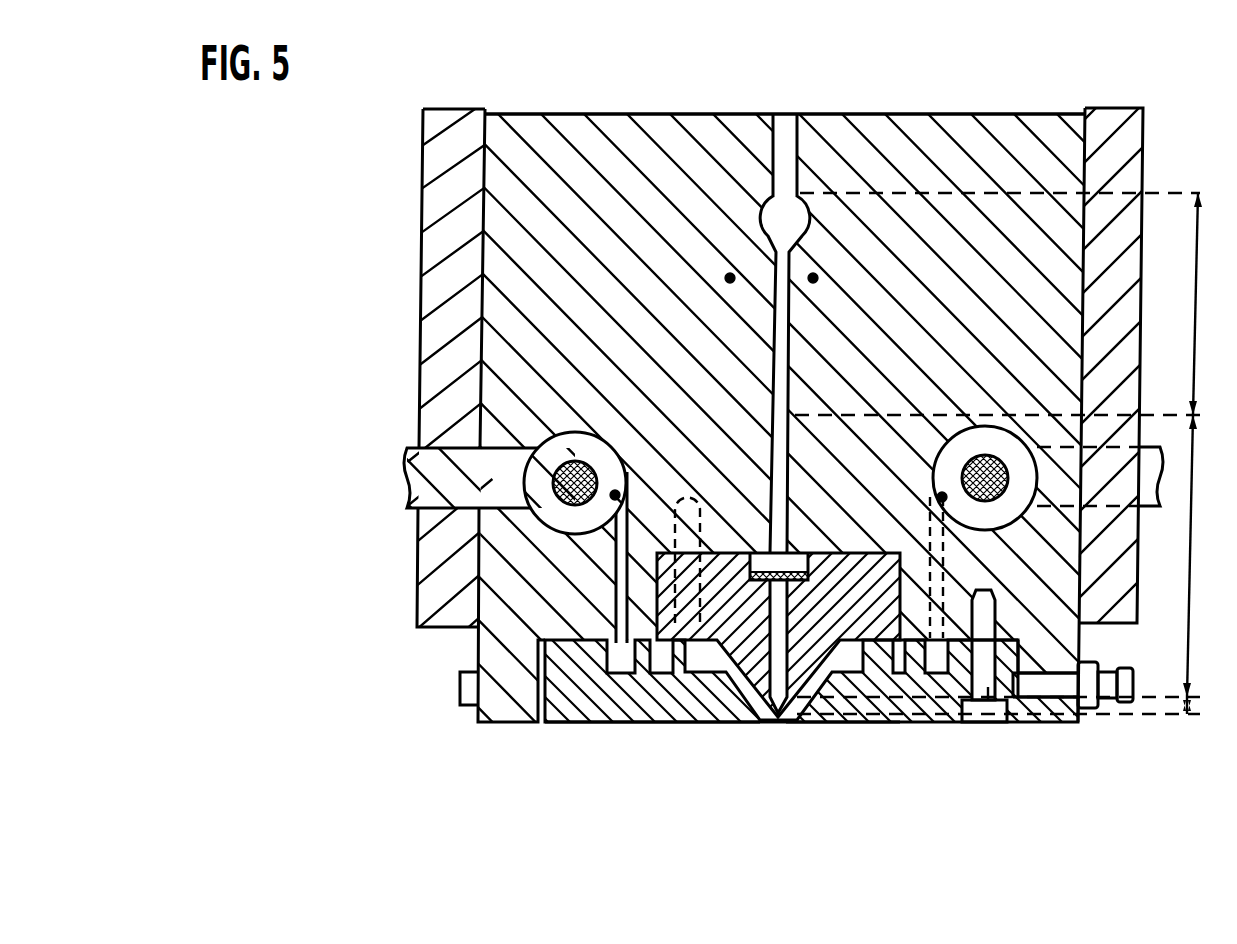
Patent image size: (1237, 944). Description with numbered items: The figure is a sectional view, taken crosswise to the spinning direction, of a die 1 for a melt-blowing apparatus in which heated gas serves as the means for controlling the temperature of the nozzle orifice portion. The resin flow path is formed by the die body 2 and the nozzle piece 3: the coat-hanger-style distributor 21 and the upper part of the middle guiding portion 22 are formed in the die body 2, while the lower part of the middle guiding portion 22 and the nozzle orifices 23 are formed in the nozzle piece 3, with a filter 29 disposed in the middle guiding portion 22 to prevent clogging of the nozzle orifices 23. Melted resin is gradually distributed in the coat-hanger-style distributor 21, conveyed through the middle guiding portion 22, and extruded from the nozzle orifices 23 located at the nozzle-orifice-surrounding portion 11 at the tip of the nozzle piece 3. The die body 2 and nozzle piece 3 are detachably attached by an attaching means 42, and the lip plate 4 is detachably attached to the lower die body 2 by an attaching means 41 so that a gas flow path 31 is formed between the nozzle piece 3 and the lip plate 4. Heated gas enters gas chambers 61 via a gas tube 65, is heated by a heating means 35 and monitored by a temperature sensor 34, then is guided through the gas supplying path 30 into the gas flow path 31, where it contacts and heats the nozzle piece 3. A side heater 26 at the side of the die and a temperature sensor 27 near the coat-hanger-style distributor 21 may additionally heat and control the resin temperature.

The die 1 is at (1035, 94).
The die body 2 is at (1057, 262).
The nozzle piece 3 is at (925, 725).
The lip plate 4 is at (912, 725).
The nozzle-orifice-surrounding portion 11 is at (740, 725).
The coat-hanger-style distributor 21 is at (808, 222).
The middle guiding portion 22 is at (1208, 556).
The nozzle orifices 23 is at (765, 767).
The side heater 26 is at (420, 351).
The temperature sensor 27 is at (730, 277).
The filter 29 is at (805, 570).
The gas supplying path 30 is at (610, 573).
The gas flow path 31 is at (801, 725).
The temperature sensor 34 is at (612, 518).
The heating means 35 is at (528, 472).
The attaching means 41 is at (993, 727).
The attaching means 42 is at (675, 603).
The gas chambers 61 is at (557, 448).
The gas tube 65 is at (443, 492).